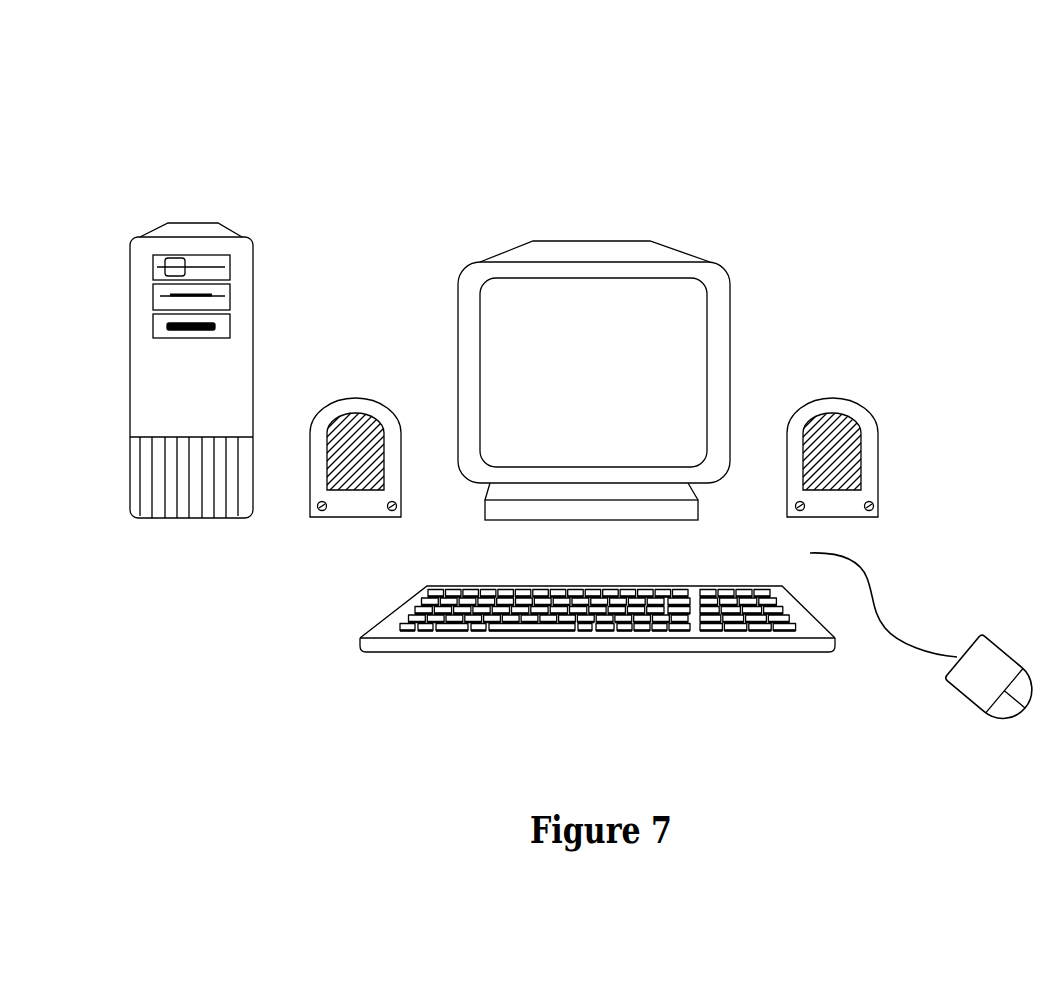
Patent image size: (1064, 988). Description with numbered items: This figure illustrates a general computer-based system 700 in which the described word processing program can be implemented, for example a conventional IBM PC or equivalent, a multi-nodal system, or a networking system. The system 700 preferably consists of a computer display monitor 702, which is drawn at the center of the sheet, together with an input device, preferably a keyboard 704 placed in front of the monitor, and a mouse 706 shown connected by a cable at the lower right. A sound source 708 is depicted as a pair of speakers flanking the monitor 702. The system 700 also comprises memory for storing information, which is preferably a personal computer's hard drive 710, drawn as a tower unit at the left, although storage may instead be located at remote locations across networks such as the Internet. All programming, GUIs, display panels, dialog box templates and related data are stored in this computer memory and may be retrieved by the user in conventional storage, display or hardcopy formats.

The computer-based system 700 is at (689, 140).
The computer display monitor 702 is at (530, 242).
The keyboard 704 is at (478, 652).
The mouse 706 is at (993, 643).
The sound source 708 is at (355, 395).
The hard drive 710 is at (168, 224).